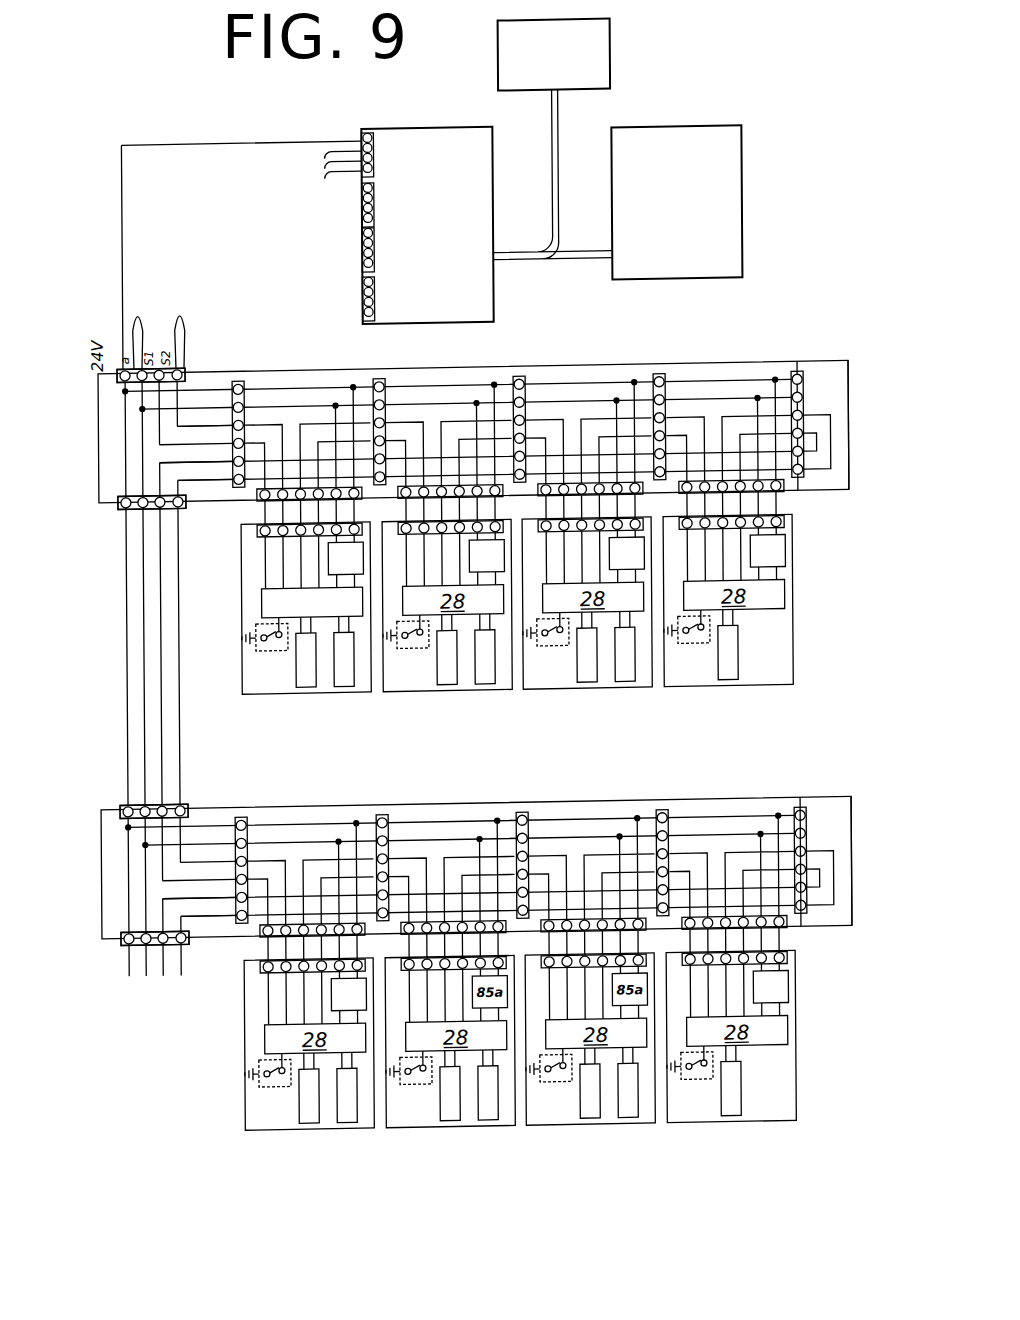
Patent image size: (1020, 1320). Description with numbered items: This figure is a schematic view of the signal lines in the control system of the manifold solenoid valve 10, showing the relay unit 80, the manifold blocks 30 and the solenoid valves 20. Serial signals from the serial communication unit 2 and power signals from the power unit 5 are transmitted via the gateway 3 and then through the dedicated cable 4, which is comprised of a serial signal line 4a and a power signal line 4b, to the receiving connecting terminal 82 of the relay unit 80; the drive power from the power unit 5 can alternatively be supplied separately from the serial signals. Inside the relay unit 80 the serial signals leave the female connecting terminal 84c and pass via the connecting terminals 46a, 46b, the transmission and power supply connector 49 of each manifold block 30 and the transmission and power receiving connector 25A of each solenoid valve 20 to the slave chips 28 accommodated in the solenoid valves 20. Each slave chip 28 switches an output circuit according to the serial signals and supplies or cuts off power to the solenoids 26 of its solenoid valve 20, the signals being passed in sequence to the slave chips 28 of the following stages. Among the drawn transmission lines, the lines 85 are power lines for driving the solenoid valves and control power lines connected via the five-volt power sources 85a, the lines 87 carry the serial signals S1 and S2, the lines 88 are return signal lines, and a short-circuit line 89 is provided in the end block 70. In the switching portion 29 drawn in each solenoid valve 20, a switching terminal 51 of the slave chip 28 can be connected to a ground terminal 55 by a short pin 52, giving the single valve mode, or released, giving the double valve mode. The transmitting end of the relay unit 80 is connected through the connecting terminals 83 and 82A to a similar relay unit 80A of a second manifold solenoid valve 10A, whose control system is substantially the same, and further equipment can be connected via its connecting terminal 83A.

The serial communication unit 2 is at (745, 148).
The gateway 3 is at (432, 127).
The dedicated cable 4 is at (127, 190).
The serial signal line 4a is at (178, 325).
The power signal line 4b is at (138, 326).
The power unit 5 is at (614, 33).
The manifold solenoid valve 10 is at (820, 283).
The manifold solenoid valve 10A is at (842, 776).
The solenoid valve 20 is at (318, 692).
The transmission and power receiving connector 25A is at (258, 529).
The solenoid 26 is at (344, 686).
The slave chip 28 is at (300, 611).
The sensor switch 29 is at (254, 647).
The manifold block 30 is at (580, 360).
The input connector 46a is at (381, 378).
The male connecting terminal 46b is at (514, 382).
The transmission and power supply connector 49 is at (258, 496).
The switching terminal 51 is at (279, 650).
The short pin 52 is at (266, 648).
The ground terminal 55 is at (244, 634).
The end block 70 is at (824, 362).
The relay unit 80 is at (205, 367).
The relay unit 80A is at (100, 874).
The receiving connecting terminal 82 is at (119, 373).
The connecting terminal 82A is at (121, 802).
The connecting terminal 83 is at (119, 500).
The connecting terminal 83A is at (125, 942).
The female connecting terminal 84c is at (240, 388).
The transmission line 85 is at (333, 400).
The 5V power source 85a is at (329, 557).
The transmission line 87 is at (298, 428).
The transmission line 88 is at (168, 476).
The short-circuit line 89 is at (833, 444).